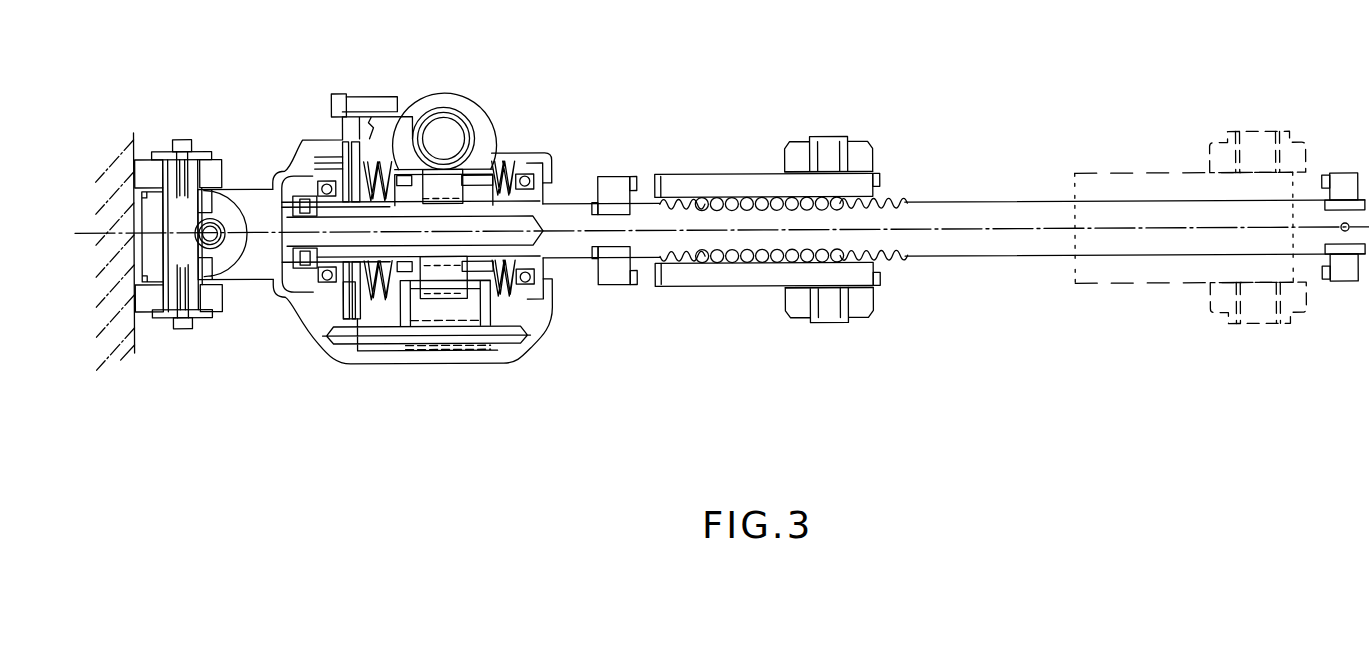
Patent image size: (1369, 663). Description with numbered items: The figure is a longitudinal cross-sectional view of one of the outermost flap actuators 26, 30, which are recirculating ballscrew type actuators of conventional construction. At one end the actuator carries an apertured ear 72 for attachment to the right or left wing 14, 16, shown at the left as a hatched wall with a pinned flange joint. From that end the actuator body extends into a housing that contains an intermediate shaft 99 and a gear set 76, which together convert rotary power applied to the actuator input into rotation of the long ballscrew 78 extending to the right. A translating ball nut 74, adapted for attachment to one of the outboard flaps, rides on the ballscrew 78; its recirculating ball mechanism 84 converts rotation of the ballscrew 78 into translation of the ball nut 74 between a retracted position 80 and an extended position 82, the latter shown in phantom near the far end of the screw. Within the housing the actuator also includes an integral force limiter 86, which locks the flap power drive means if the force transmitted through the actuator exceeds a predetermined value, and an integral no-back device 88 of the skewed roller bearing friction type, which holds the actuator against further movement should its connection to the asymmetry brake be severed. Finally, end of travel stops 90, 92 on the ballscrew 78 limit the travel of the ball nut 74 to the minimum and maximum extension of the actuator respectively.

The right wing 14 is at (112, 134).
The left wing 16 is at (80, 306).
The right outermost flap actuator 26 is at (389, 432).
The left outermost flap actuator 30 is at (313, 224).
The apertured ear 72 is at (220, 248).
The translating ball nut 74 is at (849, 138).
The gear set 76 is at (477, 134).
The ballscrew 78 is at (1010, 260).
The retracted position 80 is at (829, 78).
The extended position 82 is at (1244, 132).
The recirculating ball mechanism 84 is at (736, 268).
The integral force limiter 86 is at (457, 322).
The integral no-back device 88 is at (328, 144).
The end of travel stop 90 is at (621, 307).
The end of travel stop 92 is at (1347, 302).
The intermediate shaft 99 is at (448, 122).